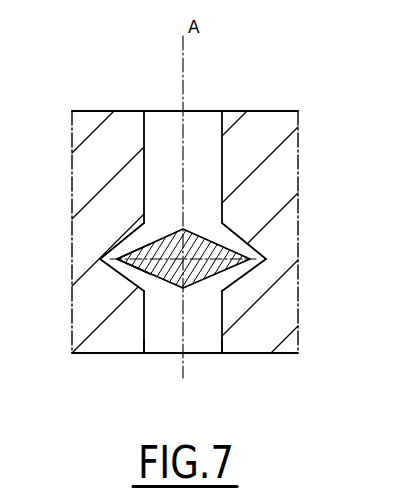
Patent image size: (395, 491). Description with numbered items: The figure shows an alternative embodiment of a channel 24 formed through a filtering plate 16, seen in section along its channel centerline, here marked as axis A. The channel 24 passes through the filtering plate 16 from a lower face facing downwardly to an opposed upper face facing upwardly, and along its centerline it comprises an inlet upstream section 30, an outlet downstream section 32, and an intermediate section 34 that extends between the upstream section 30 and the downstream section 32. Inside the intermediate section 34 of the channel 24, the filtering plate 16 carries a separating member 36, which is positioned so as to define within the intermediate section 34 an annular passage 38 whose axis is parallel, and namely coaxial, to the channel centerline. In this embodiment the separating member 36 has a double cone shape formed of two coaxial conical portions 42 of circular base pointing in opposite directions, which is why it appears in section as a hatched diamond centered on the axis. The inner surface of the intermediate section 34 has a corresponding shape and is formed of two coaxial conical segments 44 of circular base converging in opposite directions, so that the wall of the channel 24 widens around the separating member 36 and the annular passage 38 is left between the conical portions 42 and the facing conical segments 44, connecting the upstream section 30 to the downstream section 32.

The filtering plate 16 is at (288, 122).
The channel 24 is at (158, 347).
The inlet upstream section 30 is at (218, 339).
The outlet downstream section 32 is at (222, 137).
The intermediate section 34 is at (236, 276).
The separating member 36 is at (222, 247).
The annular passage 38 is at (236, 246).
The conical portions 42 is at (157, 248).
The conical segments 44 is at (242, 253).